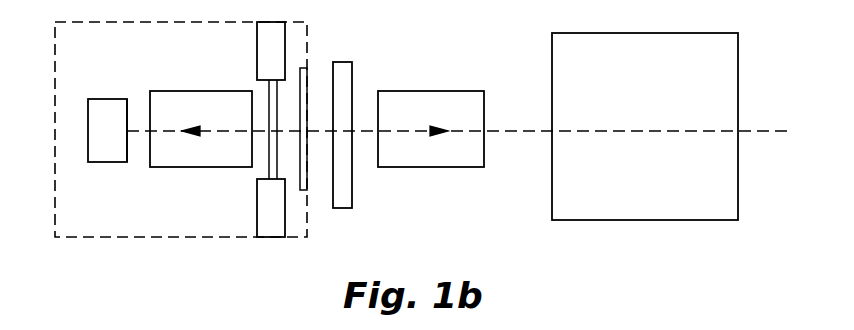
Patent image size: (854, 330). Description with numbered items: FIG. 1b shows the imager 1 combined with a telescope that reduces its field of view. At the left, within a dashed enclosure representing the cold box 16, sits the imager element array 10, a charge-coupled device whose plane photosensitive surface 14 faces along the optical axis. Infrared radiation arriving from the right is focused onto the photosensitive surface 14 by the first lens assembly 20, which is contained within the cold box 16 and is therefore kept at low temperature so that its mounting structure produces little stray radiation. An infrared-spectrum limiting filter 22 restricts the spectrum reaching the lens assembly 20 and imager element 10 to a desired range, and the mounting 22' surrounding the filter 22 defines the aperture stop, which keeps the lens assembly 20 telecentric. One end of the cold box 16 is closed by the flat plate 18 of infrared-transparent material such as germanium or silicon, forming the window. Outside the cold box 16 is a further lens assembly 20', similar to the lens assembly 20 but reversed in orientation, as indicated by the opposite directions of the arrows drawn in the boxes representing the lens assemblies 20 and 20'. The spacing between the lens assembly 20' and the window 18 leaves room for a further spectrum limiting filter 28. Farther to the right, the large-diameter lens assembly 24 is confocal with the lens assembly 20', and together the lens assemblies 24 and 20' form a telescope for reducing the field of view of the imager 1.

The imager 1 is at (200, 279).
The imager element array 10 is at (108, 162).
The plane photosensitive surface 14 is at (127, 99).
The cold box 16 is at (126, 237).
The flat plate 18 is at (305, 190).
The first lens assembly 20 is at (201, 150).
The further lens assembly 20' is at (431, 146).
The infrared-spectrum limiting filter 22 is at (245, 141).
The mounting 22' is at (249, 129).
The large-diameter lens assembly 24 is at (622, 220).
The further spectrum limiting filter 28 is at (352, 68).